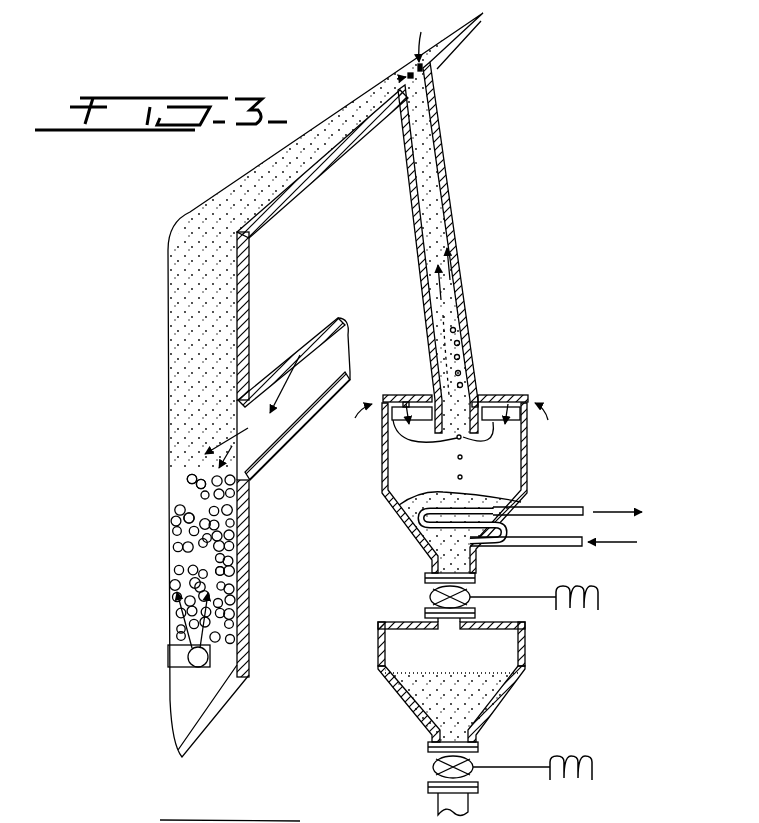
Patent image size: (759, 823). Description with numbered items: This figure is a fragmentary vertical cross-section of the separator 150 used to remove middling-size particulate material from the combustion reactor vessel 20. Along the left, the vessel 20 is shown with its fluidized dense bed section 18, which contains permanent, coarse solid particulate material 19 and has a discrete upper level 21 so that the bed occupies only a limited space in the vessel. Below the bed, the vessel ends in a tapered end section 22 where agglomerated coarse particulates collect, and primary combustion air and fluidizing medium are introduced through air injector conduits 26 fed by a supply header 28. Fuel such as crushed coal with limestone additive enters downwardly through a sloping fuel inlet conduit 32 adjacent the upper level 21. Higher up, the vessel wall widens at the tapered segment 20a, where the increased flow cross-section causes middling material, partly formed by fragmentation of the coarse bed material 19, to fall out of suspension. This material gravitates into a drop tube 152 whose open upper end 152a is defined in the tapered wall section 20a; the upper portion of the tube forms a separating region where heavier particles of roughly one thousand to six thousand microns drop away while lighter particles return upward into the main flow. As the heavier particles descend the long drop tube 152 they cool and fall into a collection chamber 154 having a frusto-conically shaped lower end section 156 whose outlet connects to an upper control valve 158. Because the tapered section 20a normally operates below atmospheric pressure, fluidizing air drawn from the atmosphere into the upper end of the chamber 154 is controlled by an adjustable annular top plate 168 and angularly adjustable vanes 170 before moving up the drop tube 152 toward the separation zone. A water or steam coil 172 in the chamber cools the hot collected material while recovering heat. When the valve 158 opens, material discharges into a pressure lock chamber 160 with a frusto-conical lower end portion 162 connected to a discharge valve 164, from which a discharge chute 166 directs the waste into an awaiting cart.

The combustion reactor vessel 20 is at (252, 590).
The tapered segment 20a is at (452, 50).
The tapered end section 22 is at (210, 722).
The sloping fuel inlet conduit 32 is at (293, 440).
The upper level 21 is at (207, 474).
The coarse solid particulate material 19 is at (182, 516).
The fluidized dense bed section 18 is at (210, 573).
The supply header 28 is at (180, 640).
The air injector conduit 26 is at (207, 667).
The drop tube 152 is at (447, 162).
The open upper end 152a is at (406, 74).
The separator 150 is at (493, 312).
The adjustable annular top plate 168 is at (490, 396).
The vanes 170 is at (398, 420).
The collection chamber 154 is at (527, 467).
The frusto-conically shaped lower end section 156 is at (410, 528).
The water or steam coil 172 is at (538, 507).
The upper control valve 158 is at (470, 590).
The pressure lock chamber 160 is at (525, 663).
The frusto-conical lower end portion 162 is at (497, 703).
The discharge valve 164 is at (437, 769).
The discharge chute 166 is at (470, 799).